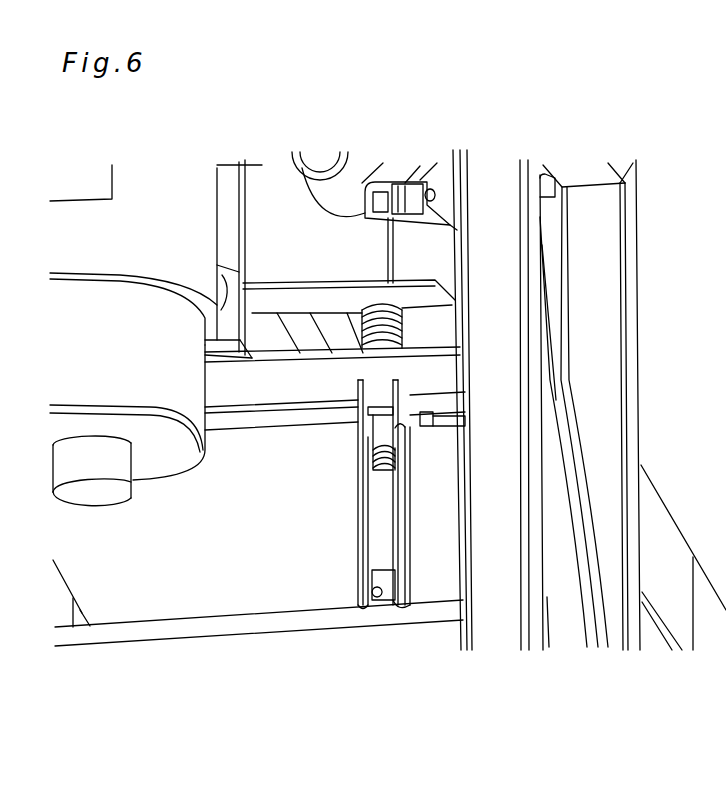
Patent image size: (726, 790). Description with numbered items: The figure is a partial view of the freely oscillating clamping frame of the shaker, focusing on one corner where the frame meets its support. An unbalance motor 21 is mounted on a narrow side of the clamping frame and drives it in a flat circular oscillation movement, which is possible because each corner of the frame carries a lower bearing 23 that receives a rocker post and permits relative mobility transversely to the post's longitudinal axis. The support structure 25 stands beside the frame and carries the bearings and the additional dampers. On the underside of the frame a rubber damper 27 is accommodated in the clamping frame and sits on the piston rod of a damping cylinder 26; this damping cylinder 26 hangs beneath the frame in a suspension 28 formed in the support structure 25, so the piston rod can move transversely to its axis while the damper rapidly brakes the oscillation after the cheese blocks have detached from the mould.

The unbalance motor 21 is at (137, 395).
The lower bearing 23 is at (384, 212).
The support structure 25 is at (643, 353).
The damping cylinder 26 is at (381, 542).
The rubber damper 27 is at (366, 325).
The suspension 28 is at (360, 458).